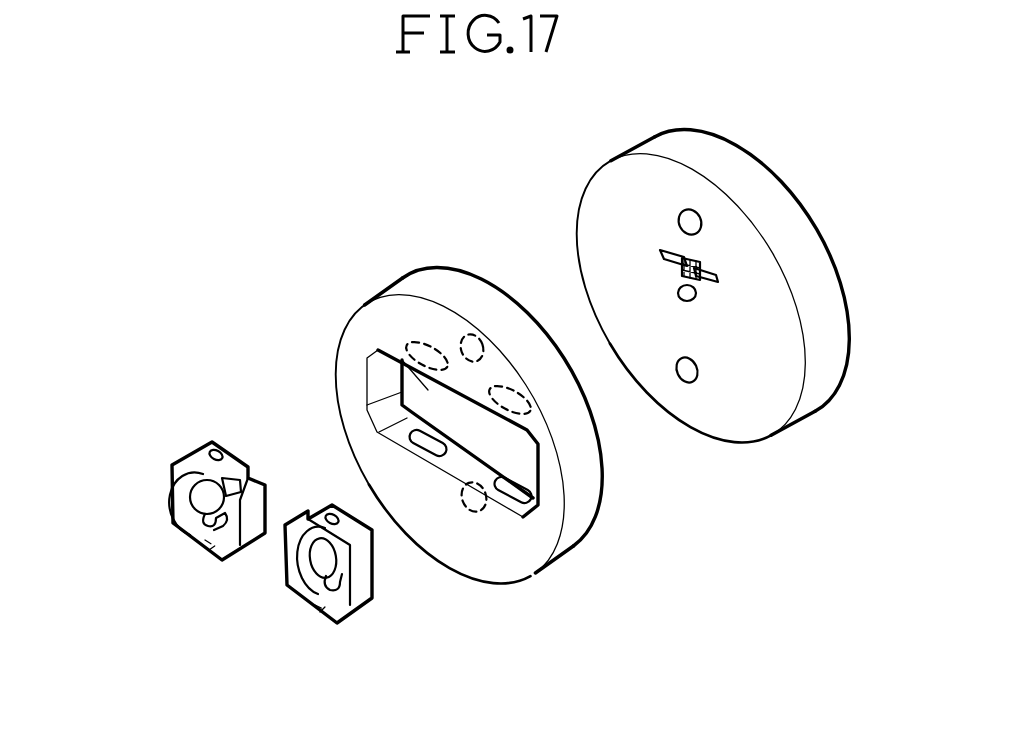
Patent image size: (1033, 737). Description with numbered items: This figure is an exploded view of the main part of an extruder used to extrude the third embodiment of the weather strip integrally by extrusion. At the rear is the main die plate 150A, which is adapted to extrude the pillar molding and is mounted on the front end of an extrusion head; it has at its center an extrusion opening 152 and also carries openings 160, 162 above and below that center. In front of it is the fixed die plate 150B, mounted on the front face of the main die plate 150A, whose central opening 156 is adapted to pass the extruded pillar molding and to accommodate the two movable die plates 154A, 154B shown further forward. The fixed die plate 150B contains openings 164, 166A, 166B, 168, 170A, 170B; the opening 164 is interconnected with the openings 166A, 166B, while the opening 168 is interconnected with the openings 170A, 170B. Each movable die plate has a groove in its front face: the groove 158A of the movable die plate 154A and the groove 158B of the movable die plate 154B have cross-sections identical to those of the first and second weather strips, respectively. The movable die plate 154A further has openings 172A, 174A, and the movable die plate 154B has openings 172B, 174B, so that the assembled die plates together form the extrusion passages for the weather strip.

The main die plate 150A is at (580, 192).
The fixed die plate 150B is at (372, 292).
The extrusion opening 152 is at (694, 262).
The movable die plate 154A is at (173, 522).
The movable die plate 154B is at (336, 627).
The opening 156 is at (367, 357).
The groove 158A is at (187, 488).
The groove 158B is at (347, 568).
The opening 160 is at (692, 216).
The opening 162 is at (700, 377).
The opening 164 is at (475, 348).
The opening 166A is at (427, 340).
The opening 166B is at (527, 403).
The opening 168 is at (463, 517).
The opening 170A is at (402, 394).
The opening 170B is at (513, 500).
The opening 172A is at (214, 449).
The opening 172B is at (332, 513).
The opening 174A is at (213, 542).
The opening 174B is at (323, 605).